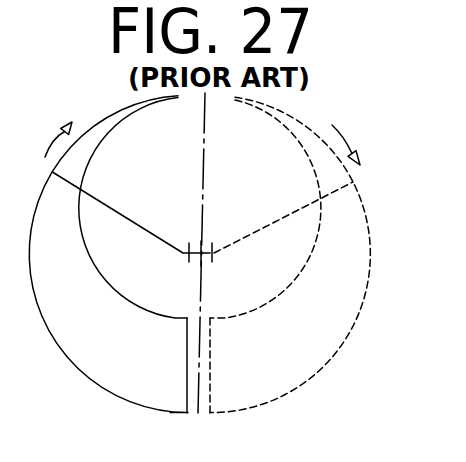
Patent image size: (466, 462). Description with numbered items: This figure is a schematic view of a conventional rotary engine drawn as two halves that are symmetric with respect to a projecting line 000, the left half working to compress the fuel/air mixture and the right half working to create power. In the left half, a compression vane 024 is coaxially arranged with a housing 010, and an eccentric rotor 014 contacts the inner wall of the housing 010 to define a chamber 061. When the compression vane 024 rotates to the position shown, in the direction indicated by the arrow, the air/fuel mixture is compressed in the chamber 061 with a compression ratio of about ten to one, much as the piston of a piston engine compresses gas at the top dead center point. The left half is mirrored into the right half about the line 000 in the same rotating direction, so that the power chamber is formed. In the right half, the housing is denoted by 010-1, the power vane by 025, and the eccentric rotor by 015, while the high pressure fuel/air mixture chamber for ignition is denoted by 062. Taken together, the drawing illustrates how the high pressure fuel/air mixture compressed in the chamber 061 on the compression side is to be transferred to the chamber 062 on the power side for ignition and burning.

The projecting line 000 is at (197, 380).
The housing 010 is at (35, 294).
The housing 010-1 is at (325, 255).
The eccentric rotor 014 is at (92, 261).
The eccentric rotor 015 is at (310, 255).
The compression vane 024 is at (150, 231).
The power vane 025 is at (281, 220).
The chamber 061 is at (93, 142).
The high pressure fuel/air mixture chamber 062 is at (306, 122).